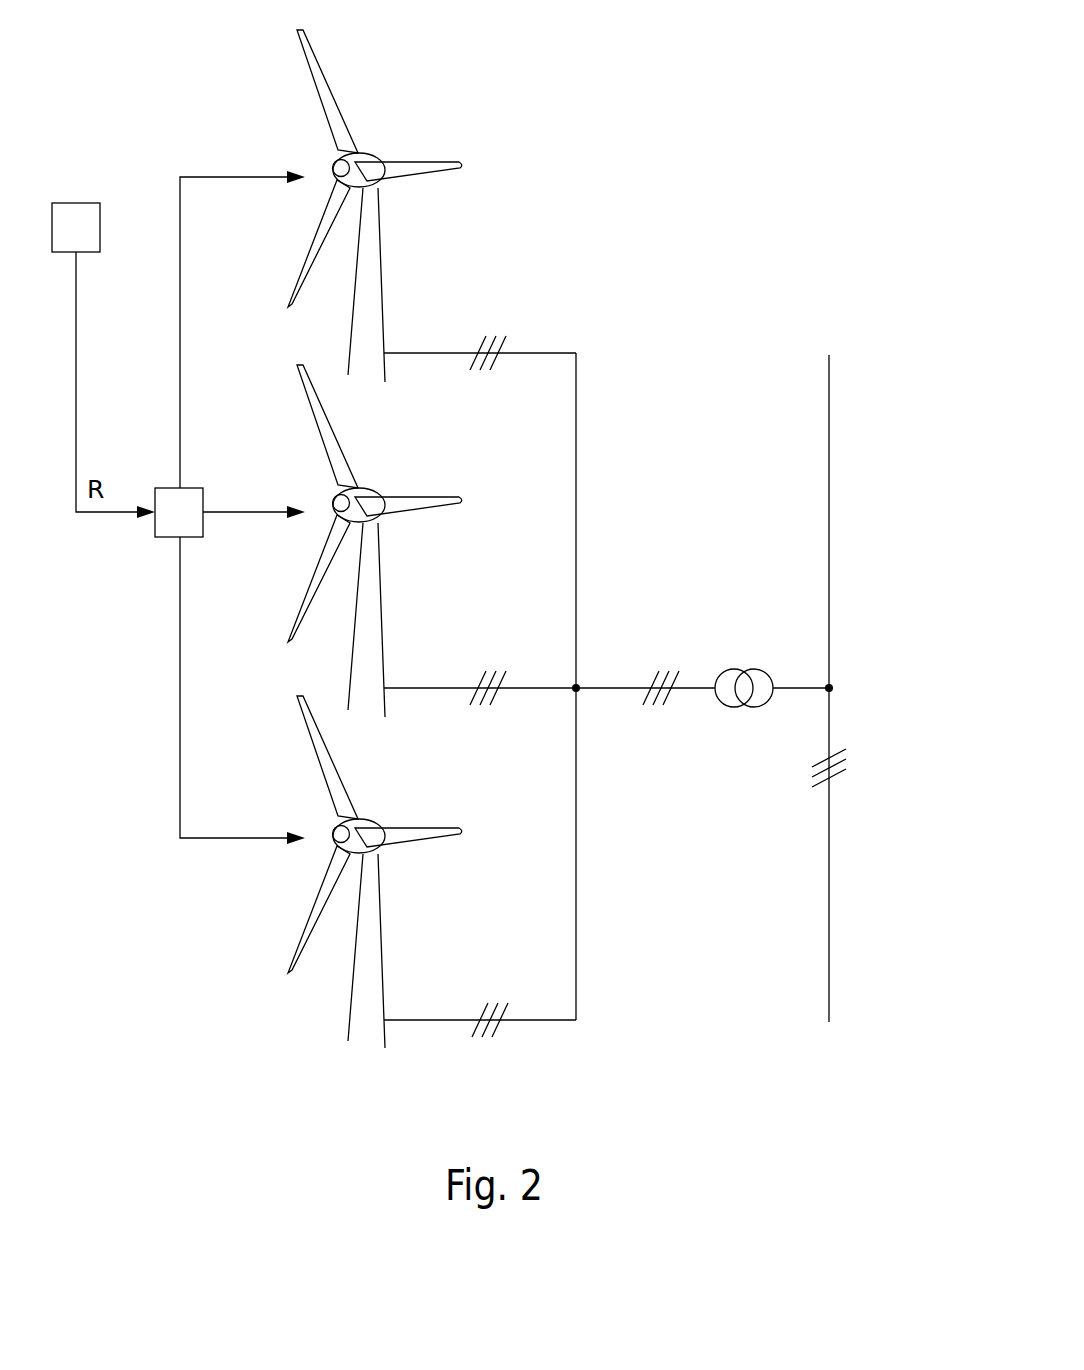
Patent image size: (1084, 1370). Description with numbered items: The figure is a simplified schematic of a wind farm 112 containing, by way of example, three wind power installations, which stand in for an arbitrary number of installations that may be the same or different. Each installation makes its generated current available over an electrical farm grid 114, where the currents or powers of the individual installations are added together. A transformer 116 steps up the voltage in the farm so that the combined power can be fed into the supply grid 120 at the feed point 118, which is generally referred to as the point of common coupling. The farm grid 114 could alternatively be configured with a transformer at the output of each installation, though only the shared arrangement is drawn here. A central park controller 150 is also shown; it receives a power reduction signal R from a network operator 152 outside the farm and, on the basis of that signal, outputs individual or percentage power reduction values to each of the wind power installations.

The wind farm 112 is at (715, 158).
The electrical farm grid 114 is at (600, 687).
The transformer 116 is at (749, 652).
The feed point 118 is at (852, 662).
The supply grid 120 is at (830, 390).
The central park controller 150 is at (193, 487).
The network operator 152 is at (78, 202).